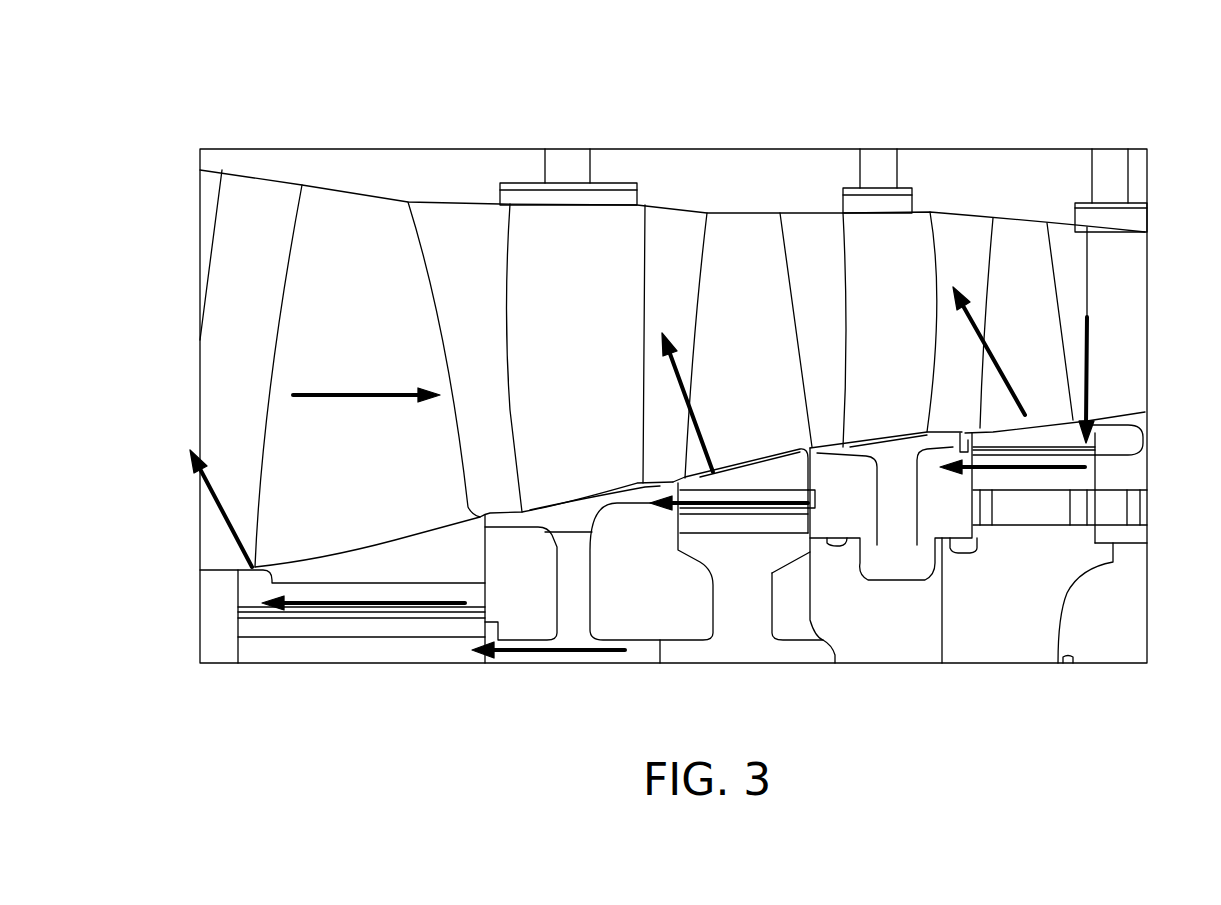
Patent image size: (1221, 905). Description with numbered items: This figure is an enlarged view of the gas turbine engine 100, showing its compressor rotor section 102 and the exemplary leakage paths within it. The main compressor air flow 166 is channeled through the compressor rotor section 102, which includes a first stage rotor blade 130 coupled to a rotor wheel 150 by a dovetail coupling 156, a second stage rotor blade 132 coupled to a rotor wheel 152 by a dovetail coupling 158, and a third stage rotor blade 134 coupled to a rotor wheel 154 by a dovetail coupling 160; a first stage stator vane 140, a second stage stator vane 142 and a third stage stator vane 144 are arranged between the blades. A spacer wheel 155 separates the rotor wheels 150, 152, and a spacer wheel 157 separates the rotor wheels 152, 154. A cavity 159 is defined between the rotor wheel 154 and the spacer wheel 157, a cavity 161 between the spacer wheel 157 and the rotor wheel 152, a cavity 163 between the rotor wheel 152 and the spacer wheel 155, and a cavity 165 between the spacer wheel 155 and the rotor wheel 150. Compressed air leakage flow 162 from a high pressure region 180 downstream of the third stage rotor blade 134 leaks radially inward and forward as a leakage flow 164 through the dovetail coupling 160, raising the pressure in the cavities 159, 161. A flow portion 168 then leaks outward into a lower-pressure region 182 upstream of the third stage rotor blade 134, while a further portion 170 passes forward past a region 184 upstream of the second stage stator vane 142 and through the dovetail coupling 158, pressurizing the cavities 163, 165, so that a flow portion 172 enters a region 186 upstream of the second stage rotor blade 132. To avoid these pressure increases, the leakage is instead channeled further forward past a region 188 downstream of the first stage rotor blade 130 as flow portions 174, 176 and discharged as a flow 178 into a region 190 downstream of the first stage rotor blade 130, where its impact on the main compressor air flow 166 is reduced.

The gas turbine engine 100 is at (252, 90).
The compressor rotor section 102 is at (500, 128).
The first stage rotor blade 130 is at (373, 333).
The second stage rotor blade 132 is at (761, 326).
The third stage rotor blade 134 is at (1039, 312).
The first stage stator vane 140 is at (593, 326).
The second stage stator vane 142 is at (906, 309).
The third stage stator vane 144 is at (1139, 311).
The rotor wheel 150 is at (458, 571).
The rotor wheel 152 is at (758, 566).
The rotor wheel 154 is at (1018, 631).
The spacer wheel 155 is at (568, 521).
The dovetail coupling 156 is at (302, 593).
The spacer wheel 157 is at (901, 631).
The dovetail coupling 158 is at (745, 496).
The cavity 159 is at (961, 511).
The dovetail coupling 160 is at (1013, 460).
The cavity 161 is at (863, 511).
The compressed air leakage flow 162 is at (1090, 370).
The cavity 163 is at (654, 572).
The leakage flow 164 is at (1053, 472).
The cavity 165 is at (536, 572).
The main compressor air flow 166 is at (352, 398).
The flow portion 168 is at (983, 343).
The flow portion 170 is at (700, 510).
The flow portion 172 is at (680, 385).
The flow portion 174 is at (518, 647).
The flow portion 176 is at (357, 601).
The flow 178 is at (204, 484).
The high pressure region 180 is at (1087, 263).
The region 182 is at (983, 262).
The region 184 is at (834, 262).
The region 186 is at (691, 272).
The region 188 is at (488, 292).
The region 190 is at (264, 292).